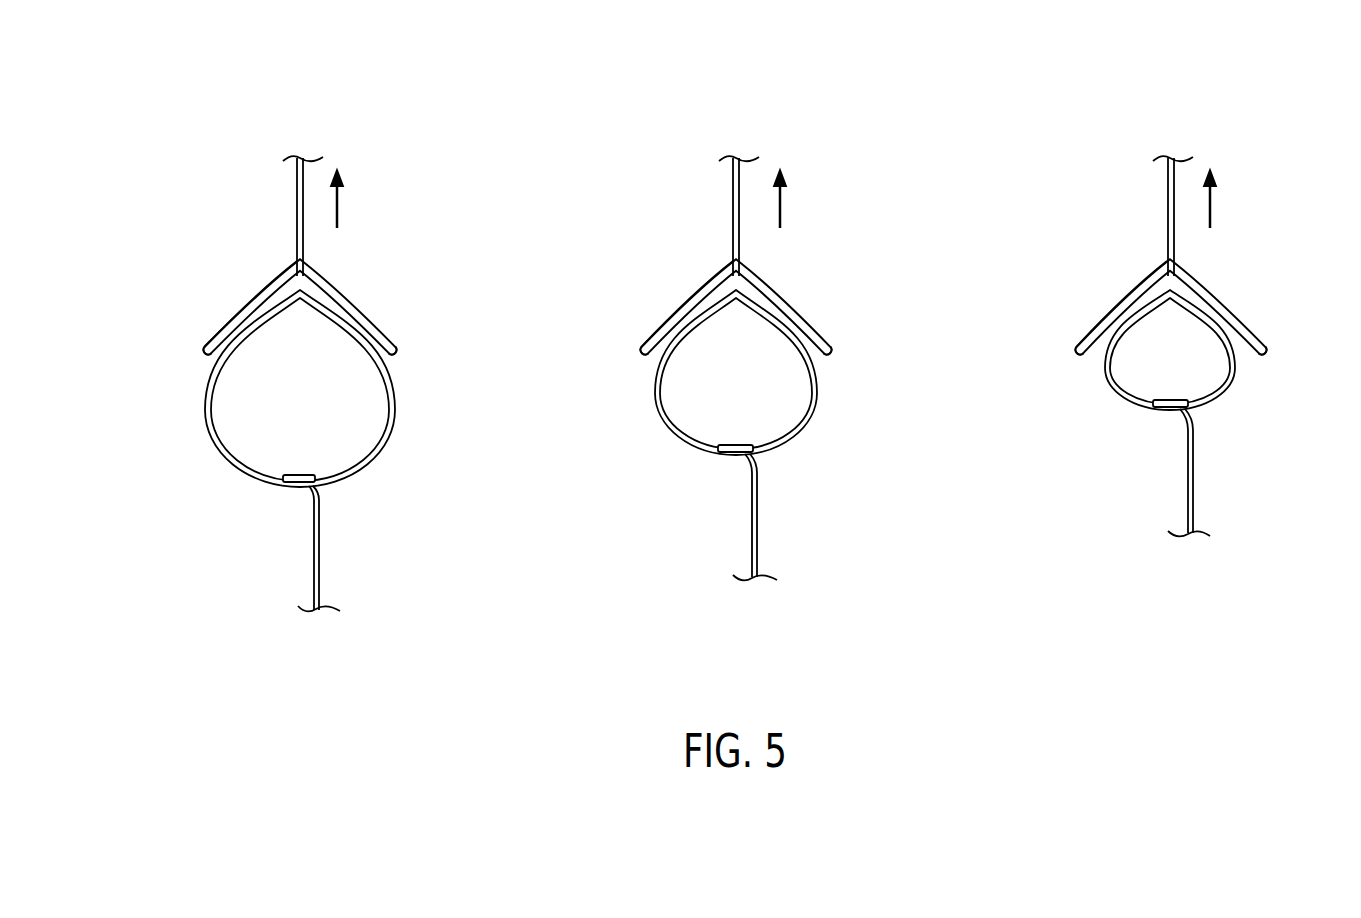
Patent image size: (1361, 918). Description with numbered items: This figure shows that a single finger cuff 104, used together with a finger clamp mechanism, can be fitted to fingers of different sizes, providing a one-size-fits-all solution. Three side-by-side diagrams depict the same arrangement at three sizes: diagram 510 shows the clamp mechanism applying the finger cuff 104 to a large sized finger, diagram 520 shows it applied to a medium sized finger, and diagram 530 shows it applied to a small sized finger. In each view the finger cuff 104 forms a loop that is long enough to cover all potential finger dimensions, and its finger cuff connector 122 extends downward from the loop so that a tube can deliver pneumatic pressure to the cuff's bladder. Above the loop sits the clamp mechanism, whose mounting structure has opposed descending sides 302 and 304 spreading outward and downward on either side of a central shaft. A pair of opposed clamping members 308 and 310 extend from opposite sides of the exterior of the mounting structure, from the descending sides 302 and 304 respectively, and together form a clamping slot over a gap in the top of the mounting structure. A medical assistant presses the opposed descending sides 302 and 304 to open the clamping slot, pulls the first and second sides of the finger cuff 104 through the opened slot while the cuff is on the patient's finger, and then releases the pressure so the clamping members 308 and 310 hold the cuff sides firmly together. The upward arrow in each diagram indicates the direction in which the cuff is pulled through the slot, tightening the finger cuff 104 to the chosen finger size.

The finger cuff 104 is at (393, 423).
The finger cuff connector 122 is at (322, 550).
The opposed descending side 302 is at (388, 332).
The opposed descending side 304 is at (207, 337).
The clamping member 308 is at (323, 268).
The clamping member 310 is at (263, 275).
The diagram 510 is at (313, 408).
The diagram 520 is at (752, 393).
The diagram 530 is at (1184, 370).